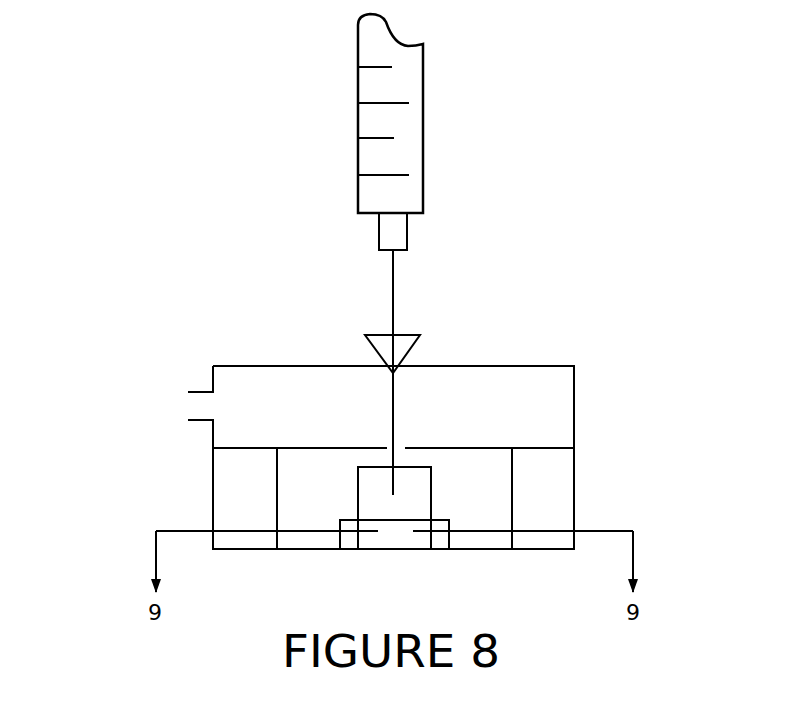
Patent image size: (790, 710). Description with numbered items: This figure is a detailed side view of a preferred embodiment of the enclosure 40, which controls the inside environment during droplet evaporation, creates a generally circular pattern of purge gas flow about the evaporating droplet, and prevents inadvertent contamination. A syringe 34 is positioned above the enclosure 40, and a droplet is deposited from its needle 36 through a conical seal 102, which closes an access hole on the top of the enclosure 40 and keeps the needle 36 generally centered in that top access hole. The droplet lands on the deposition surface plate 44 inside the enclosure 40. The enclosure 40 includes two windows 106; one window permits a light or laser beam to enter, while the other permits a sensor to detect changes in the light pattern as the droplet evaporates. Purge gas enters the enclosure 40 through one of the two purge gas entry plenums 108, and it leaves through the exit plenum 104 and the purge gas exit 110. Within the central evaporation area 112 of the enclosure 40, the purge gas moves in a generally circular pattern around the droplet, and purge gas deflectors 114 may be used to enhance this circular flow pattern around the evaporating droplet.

The syringe 34 is at (430, 97).
The needle 36 is at (395, 290).
The conical seal 102 is at (418, 328).
The enclosure 40 is at (493, 365).
The purge gas exit 110 is at (187, 387).
The exit plenum 104 is at (353, 407).
The windows 106 is at (353, 462).
The deposition surface plate 44 is at (340, 517).
The central evaporation area 112 is at (465, 483).
The purge gas deflectors 114 is at (517, 478).
The purge gas entry plenums 108 is at (537, 505).